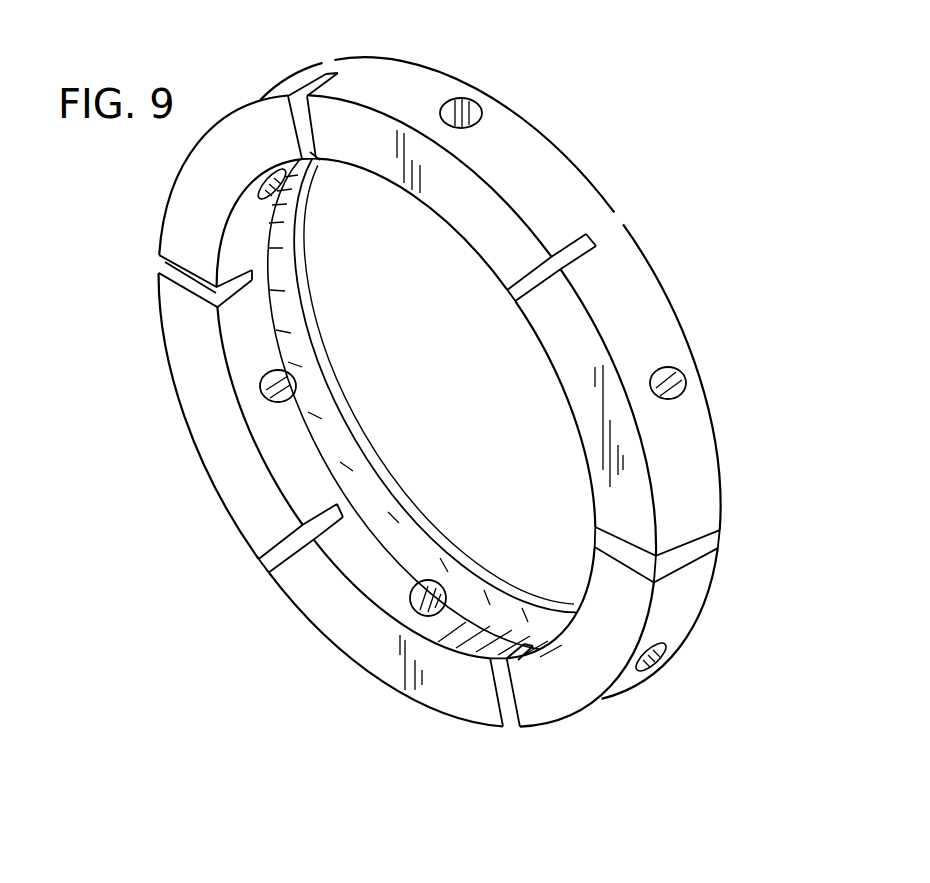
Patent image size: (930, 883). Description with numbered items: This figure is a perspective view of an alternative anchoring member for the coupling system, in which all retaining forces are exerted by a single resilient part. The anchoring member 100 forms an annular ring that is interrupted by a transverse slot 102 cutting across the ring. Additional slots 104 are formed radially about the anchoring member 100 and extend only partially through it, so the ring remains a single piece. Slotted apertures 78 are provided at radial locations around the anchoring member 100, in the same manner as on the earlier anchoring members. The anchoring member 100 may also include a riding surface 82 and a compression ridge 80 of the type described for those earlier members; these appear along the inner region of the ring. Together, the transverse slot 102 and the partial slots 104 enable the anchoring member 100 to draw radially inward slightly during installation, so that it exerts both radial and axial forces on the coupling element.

The anchoring member 100 is at (683, 258).
The transverse slot 102 is at (690, 553).
The slots 104 is at (335, 60).
The slotted apertures 78 is at (478, 104).
The compression ridge 80 is at (422, 532).
The riding surface 82 is at (352, 468).